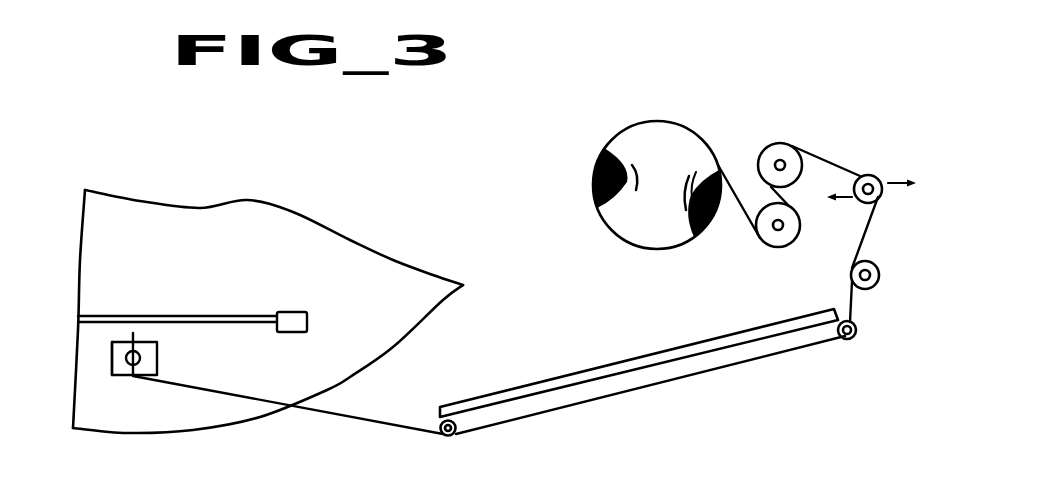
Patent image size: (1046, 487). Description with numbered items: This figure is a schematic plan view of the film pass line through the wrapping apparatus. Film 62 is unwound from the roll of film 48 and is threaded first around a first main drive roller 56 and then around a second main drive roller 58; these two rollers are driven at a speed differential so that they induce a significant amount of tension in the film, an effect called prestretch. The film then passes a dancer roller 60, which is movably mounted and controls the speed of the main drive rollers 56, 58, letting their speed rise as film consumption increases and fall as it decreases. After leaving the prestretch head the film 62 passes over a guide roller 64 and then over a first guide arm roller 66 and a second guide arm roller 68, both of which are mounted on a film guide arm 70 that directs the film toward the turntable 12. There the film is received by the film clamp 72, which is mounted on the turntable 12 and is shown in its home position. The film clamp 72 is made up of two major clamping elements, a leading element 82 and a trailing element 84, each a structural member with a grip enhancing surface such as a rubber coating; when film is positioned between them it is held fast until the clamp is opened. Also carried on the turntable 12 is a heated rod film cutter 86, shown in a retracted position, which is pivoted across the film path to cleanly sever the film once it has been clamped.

The turntable 12 is at (312, 204).
The roll of film 48 is at (596, 182).
The first main drive roller 56 is at (762, 237).
The second main drive roller 58 is at (775, 148).
The dancer roller 60 is at (863, 202).
The film 62 is at (341, 413).
The guide roller 64 is at (873, 263).
The first guide arm roller 66 is at (852, 338).
The second guide arm roller 68 is at (456, 434).
The film guide arm 70 is at (605, 365).
The film clamp 72 is at (131, 378).
The leading element 82 is at (113, 359).
The trailing element 84 is at (157, 355).
The heated rod film cutter 86 is at (117, 316).